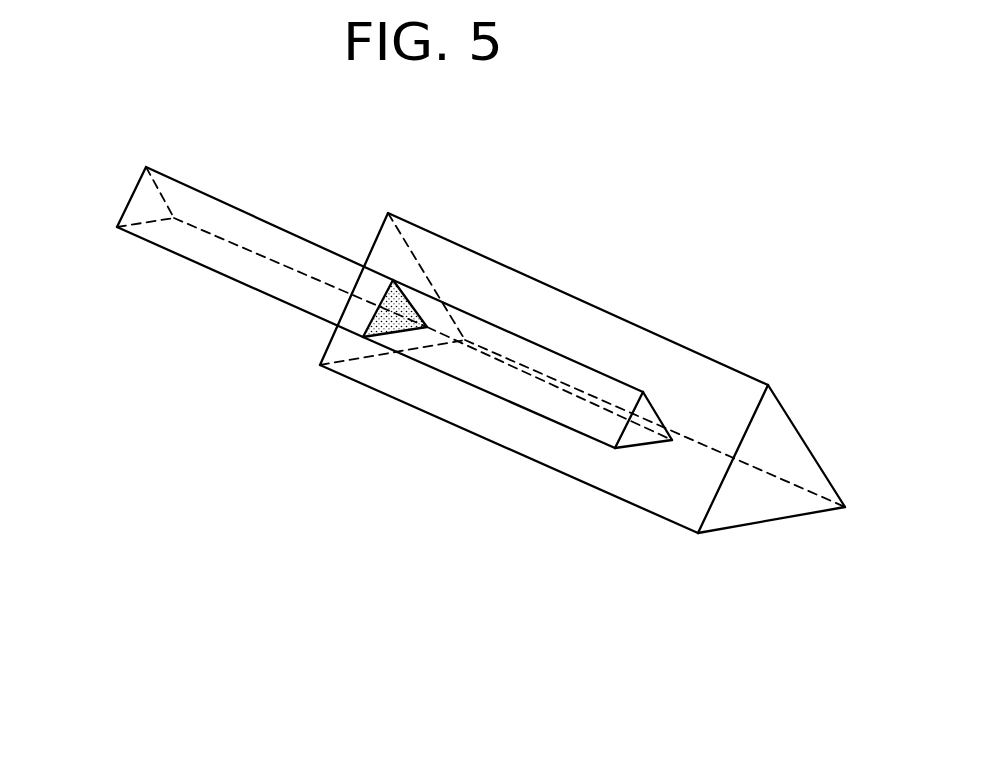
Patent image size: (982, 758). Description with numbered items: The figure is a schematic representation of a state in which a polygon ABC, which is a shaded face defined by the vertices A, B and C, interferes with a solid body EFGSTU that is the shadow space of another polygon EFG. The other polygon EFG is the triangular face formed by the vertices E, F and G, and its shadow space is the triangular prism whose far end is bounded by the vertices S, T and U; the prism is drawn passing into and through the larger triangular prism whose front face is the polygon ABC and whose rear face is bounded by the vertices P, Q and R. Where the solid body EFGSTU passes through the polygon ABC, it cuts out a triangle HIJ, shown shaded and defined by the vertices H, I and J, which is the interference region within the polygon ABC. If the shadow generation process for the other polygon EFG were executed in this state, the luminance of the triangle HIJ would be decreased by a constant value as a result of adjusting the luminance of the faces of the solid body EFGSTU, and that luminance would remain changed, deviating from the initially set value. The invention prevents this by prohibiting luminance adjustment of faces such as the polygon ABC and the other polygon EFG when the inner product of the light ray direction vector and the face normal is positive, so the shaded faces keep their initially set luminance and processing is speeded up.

The polygon ABC vertex A is at (544, 278).
The polygon ABC vertex B is at (495, 436).
The polygon ABC vertex C is at (655, 405).
The vertex P of large triangular prism P is at (804, 423).
The vertex Q of large triangular prism Q is at (727, 481).
The vertex R of large triangular prism R is at (788, 522).
The polygon EFG vertex E is at (255, 202).
The polygon EFG vertex F is at (227, 276).
The polygon EFG vertex G is at (300, 253).
The triangle HIJ vertex H is at (503, 320).
The triangle HIJ vertex I is at (483, 392).
The triangle HIJ vertex J is at (549, 371).
The solid body EFGSTU vertex S is at (656, 395).
The solid body EFGSTU vertex T is at (623, 439).
The solid body EFGSTU vertex U is at (655, 462).